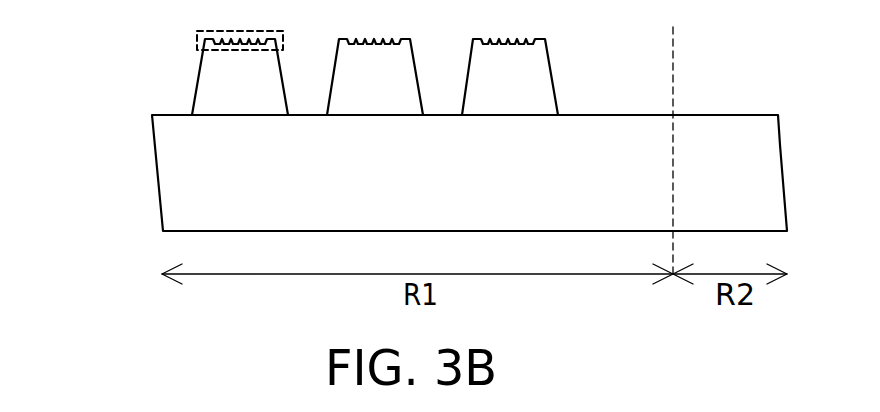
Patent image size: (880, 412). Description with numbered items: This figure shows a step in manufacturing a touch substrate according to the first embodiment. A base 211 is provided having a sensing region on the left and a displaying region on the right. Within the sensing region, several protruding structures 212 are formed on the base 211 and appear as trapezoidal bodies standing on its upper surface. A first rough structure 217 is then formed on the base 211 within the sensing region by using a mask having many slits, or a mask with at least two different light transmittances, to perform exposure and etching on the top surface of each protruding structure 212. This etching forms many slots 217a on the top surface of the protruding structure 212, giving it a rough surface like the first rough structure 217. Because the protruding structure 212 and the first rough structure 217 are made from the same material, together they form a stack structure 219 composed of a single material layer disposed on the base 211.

The base 211 is at (168, 170).
The protruding structure 212 is at (212, 80).
The first rough structure 217 is at (197, 34).
The slots 217a is at (513, 42).
The stack structure 219 is at (83, 27).